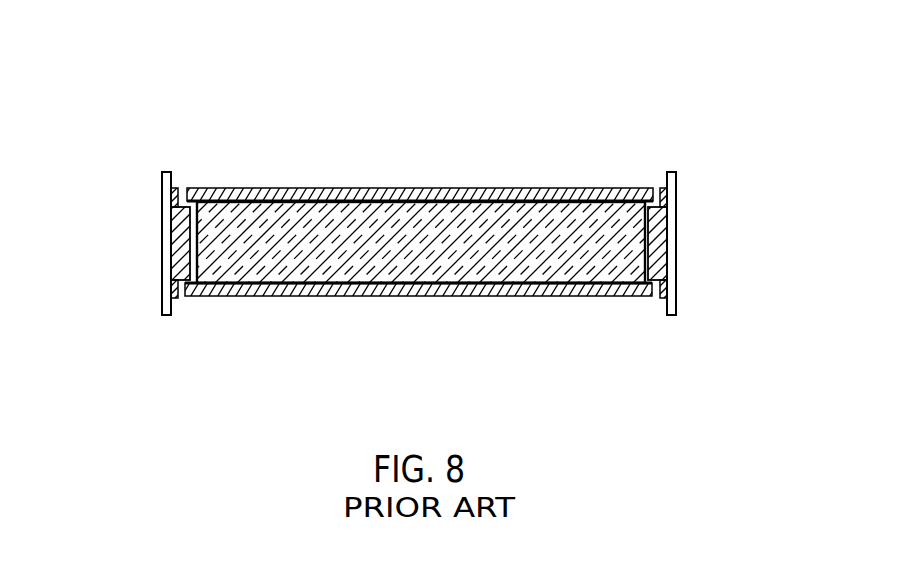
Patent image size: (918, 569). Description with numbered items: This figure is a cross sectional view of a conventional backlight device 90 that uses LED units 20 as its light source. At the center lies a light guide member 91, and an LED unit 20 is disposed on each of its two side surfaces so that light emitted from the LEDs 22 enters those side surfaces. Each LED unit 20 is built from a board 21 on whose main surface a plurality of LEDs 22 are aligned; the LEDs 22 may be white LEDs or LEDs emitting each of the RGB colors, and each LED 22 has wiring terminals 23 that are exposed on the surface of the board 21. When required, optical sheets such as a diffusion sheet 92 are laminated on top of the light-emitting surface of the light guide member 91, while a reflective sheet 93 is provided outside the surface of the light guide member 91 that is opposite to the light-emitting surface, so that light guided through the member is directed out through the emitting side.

The conventional backlight device 90 is at (549, 105).
The LED unit 20 is at (172, 172).
The board 21 is at (168, 218).
The LED 22 is at (182, 248).
The wiring terminal 23 is at (175, 298).
The light guide member 91 is at (402, 228).
The diffusion sheet 92 is at (478, 198).
The reflective sheet 93 is at (468, 298).